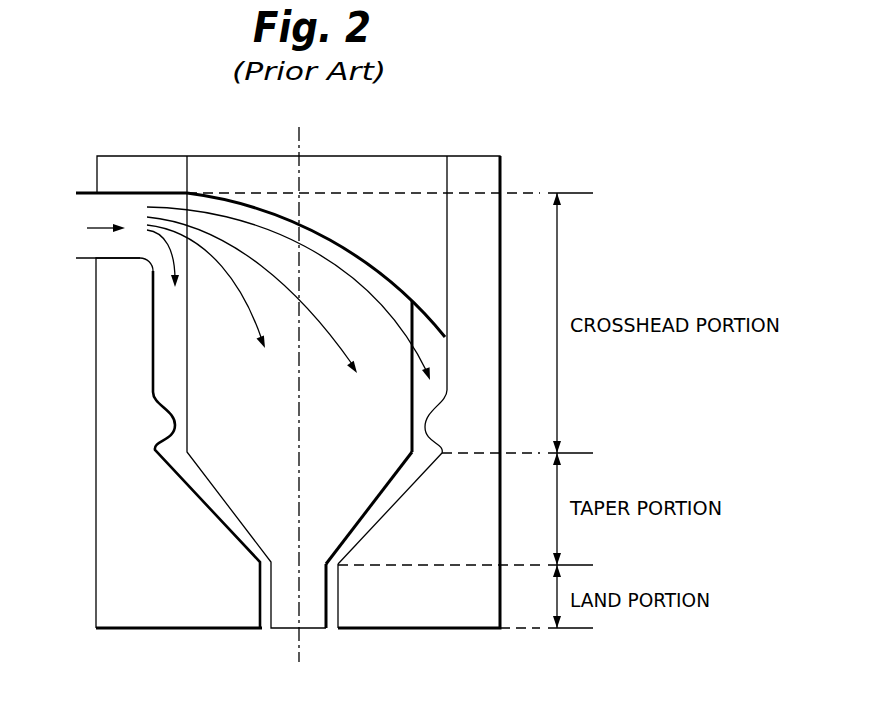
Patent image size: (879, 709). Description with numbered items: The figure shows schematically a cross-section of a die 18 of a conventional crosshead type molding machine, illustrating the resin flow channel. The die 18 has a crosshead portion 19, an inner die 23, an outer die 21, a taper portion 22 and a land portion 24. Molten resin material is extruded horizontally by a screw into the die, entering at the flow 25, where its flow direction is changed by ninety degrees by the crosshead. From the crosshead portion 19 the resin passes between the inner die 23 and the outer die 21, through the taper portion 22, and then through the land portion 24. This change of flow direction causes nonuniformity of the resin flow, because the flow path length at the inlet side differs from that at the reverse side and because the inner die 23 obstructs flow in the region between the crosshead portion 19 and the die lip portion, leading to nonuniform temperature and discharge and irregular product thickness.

The die 18 is at (461, 141).
The crosshead portion 19 is at (478, 242).
The outer die 21 is at (178, 587).
The taper portion 22 is at (376, 497).
The inner die 23 is at (290, 317).
The land portion 24 is at (321, 611).
The resin flow 25 is at (93, 229).